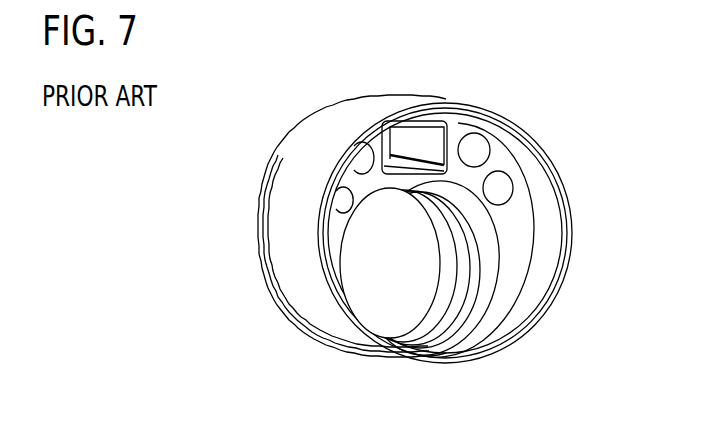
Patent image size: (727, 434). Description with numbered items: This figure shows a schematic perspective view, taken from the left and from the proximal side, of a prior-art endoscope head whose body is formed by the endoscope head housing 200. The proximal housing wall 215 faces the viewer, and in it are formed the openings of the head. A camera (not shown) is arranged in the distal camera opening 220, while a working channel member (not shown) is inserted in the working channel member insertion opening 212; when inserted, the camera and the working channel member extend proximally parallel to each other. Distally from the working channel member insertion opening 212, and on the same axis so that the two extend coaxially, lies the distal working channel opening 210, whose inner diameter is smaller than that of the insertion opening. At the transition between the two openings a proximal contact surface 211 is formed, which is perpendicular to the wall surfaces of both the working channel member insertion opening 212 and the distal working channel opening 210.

The endoscope head housing 200 is at (308, 303).
The distal working channel opening 210 is at (440, 302).
The proximal contact surface 211 is at (470, 284).
The working channel member insertion opening 212 is at (492, 257).
The proximal housing wall 215 is at (547, 182).
The distal camera opening 220 is at (421, 140).